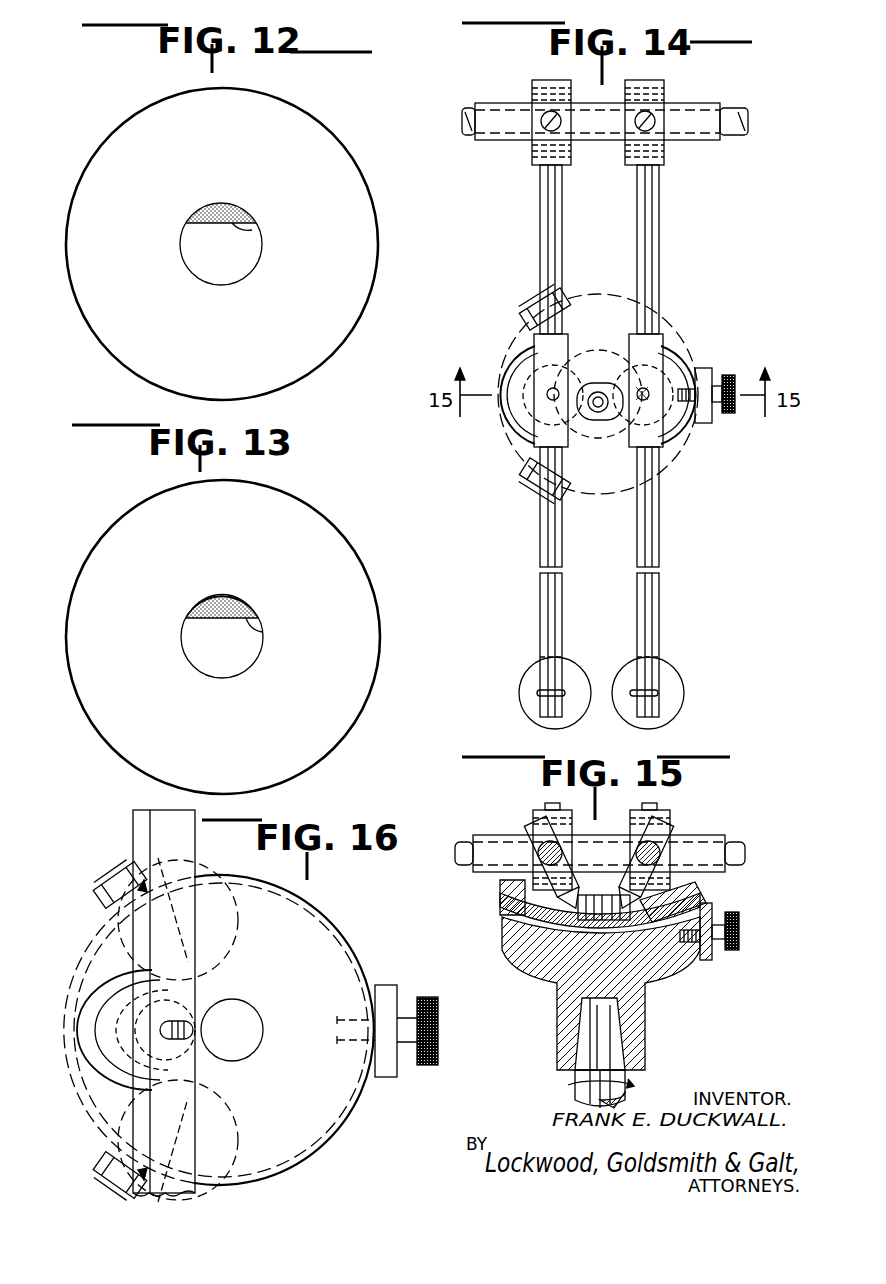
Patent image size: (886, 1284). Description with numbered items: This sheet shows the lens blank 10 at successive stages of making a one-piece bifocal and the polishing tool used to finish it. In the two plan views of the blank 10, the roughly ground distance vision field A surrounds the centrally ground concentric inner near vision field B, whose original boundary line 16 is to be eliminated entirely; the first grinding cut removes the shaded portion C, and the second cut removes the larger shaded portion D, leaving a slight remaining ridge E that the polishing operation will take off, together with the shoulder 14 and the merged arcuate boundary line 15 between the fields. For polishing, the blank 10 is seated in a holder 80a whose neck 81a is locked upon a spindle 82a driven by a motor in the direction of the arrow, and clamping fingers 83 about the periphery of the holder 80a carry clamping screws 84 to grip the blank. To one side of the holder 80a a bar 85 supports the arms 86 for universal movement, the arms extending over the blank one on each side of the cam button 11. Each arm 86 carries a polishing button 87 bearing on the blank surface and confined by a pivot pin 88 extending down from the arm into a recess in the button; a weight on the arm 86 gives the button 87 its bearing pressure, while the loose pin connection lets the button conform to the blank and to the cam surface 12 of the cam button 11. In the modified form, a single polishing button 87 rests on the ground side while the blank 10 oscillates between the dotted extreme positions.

In FIG. 12, the lens blank 10 is at (311, 113).
In FIG. 13, the lens blank 10 is at (314, 507).
In FIG. 14, the lens blank 10 is at (598, 295).
In FIG. 15, the lens blank 10 is at (500, 905).
In FIG. 16, the lens blank 10 is at (315, 925).
In FIG. 14, the cam button 11 is at (603, 388).
In FIG. 15, the cam button 11 is at (594, 918).
In FIG. 16, the cam button 11 is at (253, 1008).
In FIG. 14, the cam surface 12 is at (602, 420).
In FIG. 15, the cam surface 12 is at (617, 918).
In FIG. 12, the shoulder 14 is at (238, 226).
In FIG. 13, the shoulder 14 is at (262, 632).
In FIG. 12, the arcuate boundary line 15 is at (207, 283).
In FIG. 13, the arcuate boundary line 15 is at (207, 678).
In FIG. 12, the original boundary line 16 is at (232, 205).
In FIG. 13, the original boundary line 16 is at (232, 597).
In FIG. 15, the holder 80a is at (660, 960).
In FIG. 15, the neck 81a is at (632, 1018).
In FIG. 15, the spindle 82a is at (573, 1100).
In FIG. 14, the clamping fingers 83 is at (526, 312).
In FIG. 15, the clamping fingers 83 is at (712, 905).
In FIG. 16, the clamping fingers 83 is at (102, 903).
In FIG. 14, the clamping screws 84 is at (731, 376).
In FIG. 15, the clamping screws 84 is at (740, 928).
In FIG. 16, the clamping screws 84 is at (438, 1012).
In FIG. 14, the bar 85 is at (737, 108).
In FIG. 15, the bar 85 is at (735, 842).
In FIG. 14, the arms 86 is at (548, 195).
In FIG. 15, the arms 86 is at (530, 836).
In FIG. 16, the arms 86 is at (158, 835).
In FIG. 14, the polishing button 87 is at (513, 416).
In FIG. 15, the polishing button 87 is at (505, 888).
In FIG. 16, the polishing button 87 is at (107, 1002).
In FIG. 14, the pivot pin 88 is at (548, 392).
In FIG. 15, the pivot pin 88 is at (545, 870).
In FIG. 16, the pivot pin 88 is at (190, 1024).
In FIG. 12, the distance vision field A is at (305, 161).
In FIG. 13, the distance vision field A is at (321, 579).
In FIG. 12, the inner near vision field B is at (233, 261).
In FIG. 13, the inner near vision field B is at (233, 657).
In FIG. 12, the shaded portion C is at (218, 214).
In FIG. 13, the shaded portion D is at (237, 608).
In FIG. 13, the remaining ridge E is at (208, 600).